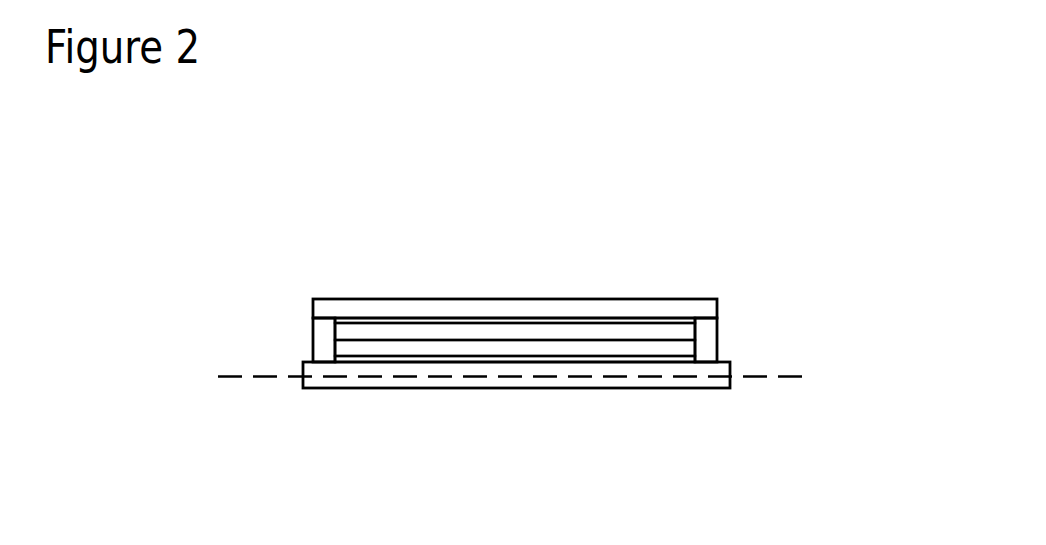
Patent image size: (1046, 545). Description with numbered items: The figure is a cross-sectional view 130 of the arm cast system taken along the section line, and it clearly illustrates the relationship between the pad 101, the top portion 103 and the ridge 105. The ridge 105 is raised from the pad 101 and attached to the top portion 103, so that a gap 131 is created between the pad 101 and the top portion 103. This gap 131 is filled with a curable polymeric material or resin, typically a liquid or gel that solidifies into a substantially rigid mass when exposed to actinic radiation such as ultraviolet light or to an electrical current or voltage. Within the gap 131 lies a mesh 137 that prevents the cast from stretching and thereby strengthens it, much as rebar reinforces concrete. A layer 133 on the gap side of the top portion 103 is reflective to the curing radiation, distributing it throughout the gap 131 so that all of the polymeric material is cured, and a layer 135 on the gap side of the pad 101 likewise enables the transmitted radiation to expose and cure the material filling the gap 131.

The cross-sectional view 130 is at (525, 138).
The pad 101 is at (385, 377).
The top portion 103 is at (515, 299).
The ridge 105 is at (312, 340).
The gap 131 is at (587, 328).
The layer 133 is at (433, 318).
The layer 135 is at (532, 360).
The mesh 137 is at (558, 343).